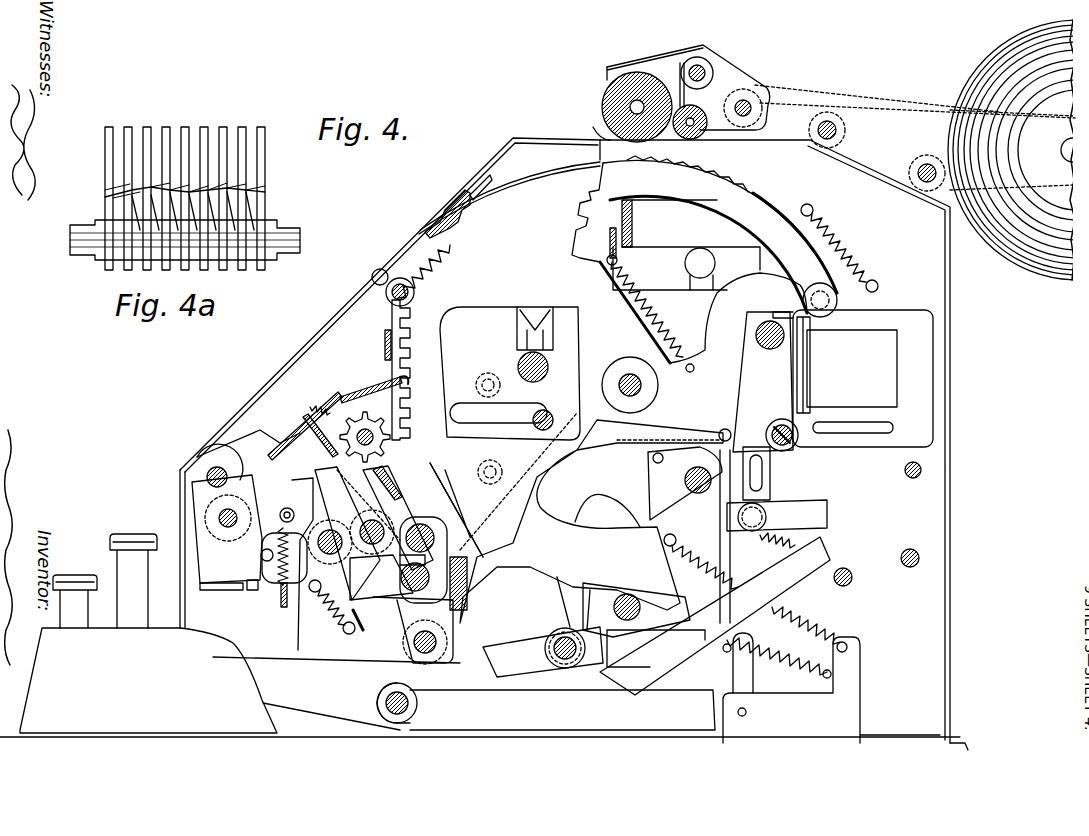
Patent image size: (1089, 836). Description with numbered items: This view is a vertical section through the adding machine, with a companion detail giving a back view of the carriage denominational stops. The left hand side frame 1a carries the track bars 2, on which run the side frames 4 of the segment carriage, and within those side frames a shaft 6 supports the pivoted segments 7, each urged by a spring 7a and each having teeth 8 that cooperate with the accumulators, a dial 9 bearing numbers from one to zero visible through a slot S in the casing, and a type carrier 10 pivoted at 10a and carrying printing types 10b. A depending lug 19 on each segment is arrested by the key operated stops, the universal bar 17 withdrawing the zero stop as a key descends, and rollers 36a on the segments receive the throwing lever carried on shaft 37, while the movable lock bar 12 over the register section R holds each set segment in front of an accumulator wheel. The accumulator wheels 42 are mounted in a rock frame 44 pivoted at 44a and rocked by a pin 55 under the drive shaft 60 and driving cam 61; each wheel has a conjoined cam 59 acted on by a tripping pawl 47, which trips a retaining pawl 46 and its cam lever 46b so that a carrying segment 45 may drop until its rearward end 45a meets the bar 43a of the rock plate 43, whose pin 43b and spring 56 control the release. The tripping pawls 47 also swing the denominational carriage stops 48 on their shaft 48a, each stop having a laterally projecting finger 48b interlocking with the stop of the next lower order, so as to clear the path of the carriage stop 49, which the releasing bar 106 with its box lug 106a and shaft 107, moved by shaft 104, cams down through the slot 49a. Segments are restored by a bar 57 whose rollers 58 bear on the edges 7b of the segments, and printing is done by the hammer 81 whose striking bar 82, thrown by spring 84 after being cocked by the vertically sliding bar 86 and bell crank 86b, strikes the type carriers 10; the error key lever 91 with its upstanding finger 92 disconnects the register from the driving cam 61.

In FIG. 4, the left hand side frame 1a is at (943, 297).
In FIG. 4, the track bars 2 is at (755, 334).
In FIG. 4, the side frames of the segment carriage 4 is at (642, 312).
In FIG. 4, the shaft 6 is at (645, 392).
In FIG. 4, the segments 7 is at (440, 253).
In FIG. 4, the spring 7a is at (622, 305).
In FIG. 4, the edges 7b is at (571, 507).
In FIG. 4, the teeth 8 is at (420, 270).
In FIG. 4, the dial 9 is at (505, 200).
In FIG. 4, the type carriers 10 is at (613, 180).
In FIG. 4, the pivot 10a is at (805, 300).
In FIG. 4, the printing types 10b is at (680, 185).
In FIG. 4, the movable lock bar 12 is at (403, 390).
In FIG. 4, the universal bar 17 is at (495, 660).
In FIG. 4, the depending lugs 19 is at (715, 616).
In FIG. 4, the rollers 36a is at (750, 418).
In FIG. 4, the shaft 37 is at (905, 471).
In FIG. 4, the accumulator wheels 42 is at (340, 416).
In FIG. 4, the rock plate 43 is at (227, 513).
In FIG. 4, the bar 43a is at (200, 587).
In FIG. 4, the pin 43b is at (303, 628).
In FIG. 4, the rock frame 44 is at (287, 458).
In FIG. 4, the pivot 44a is at (414, 530).
In FIG. 4, the carrying segments 45 is at (294, 426).
In FIG. 4, the rearward end 45a is at (284, 608).
In FIG. 4, the retaining pawls 46 is at (318, 494).
In FIG. 4, the cam lever 46b is at (520, 563).
In FIG. 4, the tripping pawls 47 is at (380, 487).
In FIG. 4A, the denominational carriage stops 48 is at (200, 128).
In FIG. 4, the denominational carriage stops 48 is at (470, 592).
In FIG. 4A, the shaft 48a is at (75, 240).
In FIG. 4, the shaft 48a is at (412, 645).
In FIG. 4A, the laterally projecting finger 48b is at (127, 190).
In FIG. 4, the carriage stop 49 is at (470, 537).
In FIG. 4, the slot 49a is at (455, 395).
In FIG. 4, the pin 55 is at (360, 555).
In FIG. 4, the spring 56 is at (818, 622).
In FIG. 4, the bar 57 is at (688, 484).
In FIG. 4, the rollers 58 is at (655, 462).
In FIG. 4, the conjoined cam 59 is at (357, 413).
In FIG. 4, the drive shaft 60 is at (627, 598).
In FIG. 4, the driving cam 61 is at (701, 547).
In FIG. 4, the printing hammer 81 is at (780, 195).
In FIG. 4, the striking bar 82 is at (633, 230).
In FIG. 4, the spring 84 is at (842, 250).
In FIG. 4, the vertically sliding bar 86 is at (772, 472).
In FIG. 4, the bell crank 86b is at (777, 524).
In FIG. 4, the error key lever 91 is at (656, 652).
In FIG. 4, the upstanding finger 92 is at (567, 607).
In FIG. 4, the shaft 104 is at (377, 692).
In FIG. 4, the releasing bar 106 is at (825, 407).
In FIG. 4, the box lug 106a is at (835, 305).
In FIG. 4, the shaft 107 is at (506, 463).
In FIG. 4, the register section R is at (285, 424).
In FIG. 4, the slot S is at (455, 214).